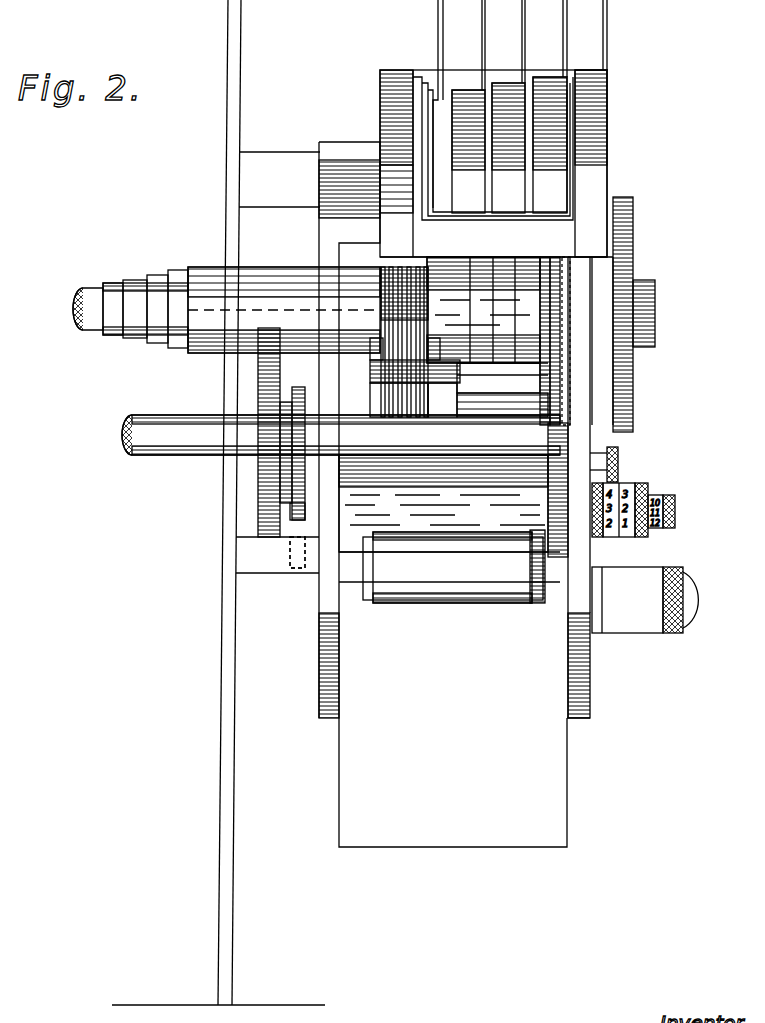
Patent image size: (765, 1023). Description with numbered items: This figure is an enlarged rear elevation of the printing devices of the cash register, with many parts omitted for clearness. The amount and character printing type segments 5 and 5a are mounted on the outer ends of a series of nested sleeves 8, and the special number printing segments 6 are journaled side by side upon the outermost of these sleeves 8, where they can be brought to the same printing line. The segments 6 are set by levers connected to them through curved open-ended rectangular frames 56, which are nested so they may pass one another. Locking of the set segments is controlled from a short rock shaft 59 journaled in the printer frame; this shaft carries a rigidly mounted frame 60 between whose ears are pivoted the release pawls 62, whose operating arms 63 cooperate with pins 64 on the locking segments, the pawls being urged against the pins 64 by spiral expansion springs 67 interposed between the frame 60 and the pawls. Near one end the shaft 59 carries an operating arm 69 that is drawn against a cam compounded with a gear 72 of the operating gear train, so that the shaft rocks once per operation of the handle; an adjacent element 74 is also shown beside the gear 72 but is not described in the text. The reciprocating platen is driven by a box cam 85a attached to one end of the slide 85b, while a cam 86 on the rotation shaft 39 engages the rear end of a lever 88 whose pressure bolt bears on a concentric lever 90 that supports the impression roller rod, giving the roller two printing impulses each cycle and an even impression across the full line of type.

The nested sleeves 8 is at (193, 267).
The curved open-ended rectangular frames 56 is at (600, 168).
The box cam 85a is at (633, 213).
The special number printing segments 6 is at (421, 267).
The pins 64 is at (396, 306).
The gear 72 is at (570, 272).
The operating arms 63 is at (483, 310).
The gear 74 is at (583, 327).
The frame 60 is at (340, 355).
The operating arm 69 is at (563, 357).
The spiral expansion springs 67 is at (416, 388).
The regular amount printing segments 5 is at (495, 391).
The release pawls 62 is at (408, 418).
The rock shaft 59 is at (478, 410).
The rotation shaft 39 is at (180, 438).
The cam 86 is at (297, 457).
The slide 85b is at (602, 433).
The lever 88 is at (297, 517).
The character printing segments 5a is at (478, 440).
The lever 90 is at (313, 522).